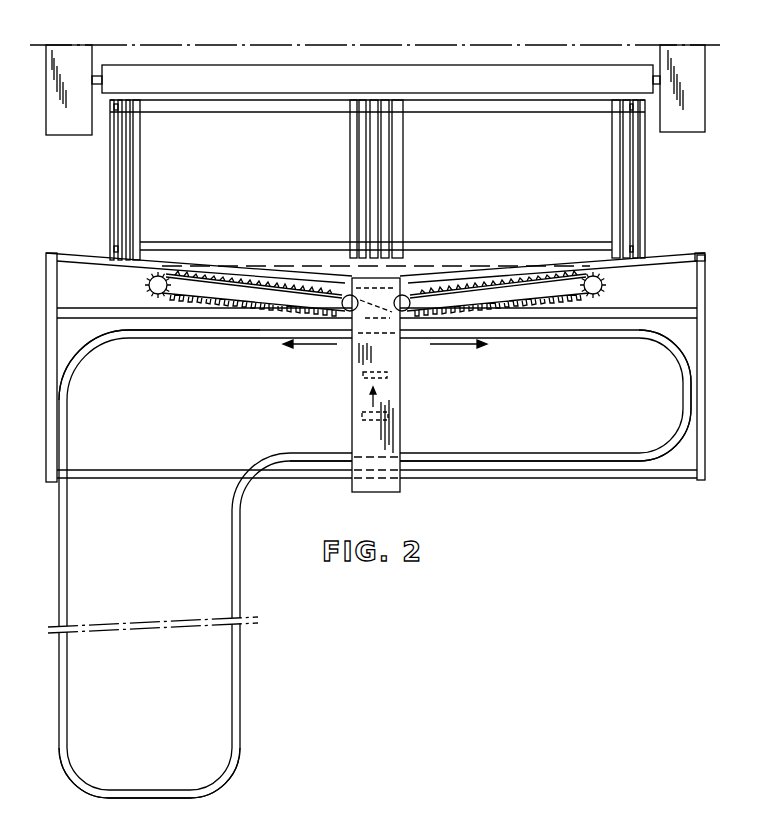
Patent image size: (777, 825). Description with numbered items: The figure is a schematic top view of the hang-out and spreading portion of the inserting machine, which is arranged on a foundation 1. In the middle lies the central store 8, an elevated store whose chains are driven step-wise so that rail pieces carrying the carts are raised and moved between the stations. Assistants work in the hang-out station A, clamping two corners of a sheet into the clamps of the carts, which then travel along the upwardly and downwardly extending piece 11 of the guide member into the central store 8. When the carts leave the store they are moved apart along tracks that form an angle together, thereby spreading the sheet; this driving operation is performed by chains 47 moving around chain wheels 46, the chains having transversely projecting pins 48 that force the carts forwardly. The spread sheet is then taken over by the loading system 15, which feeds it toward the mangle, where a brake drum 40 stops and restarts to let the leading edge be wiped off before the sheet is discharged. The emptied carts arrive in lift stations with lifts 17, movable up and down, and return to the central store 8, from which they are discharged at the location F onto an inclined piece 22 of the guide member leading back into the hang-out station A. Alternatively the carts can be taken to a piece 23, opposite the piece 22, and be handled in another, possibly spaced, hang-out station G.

The foundation 1 is at (671, 312).
The central store 8 is at (400, 486).
The upwardly and downwardly extending piece 11 is at (437, 458).
The loading system 15 is at (651, 185).
The lift 17 is at (688, 259).
The inclined piece 22 is at (637, 338).
The piece 23 is at (177, 338).
The brake drum 40 is at (157, 177).
The chain wheels 46 is at (591, 287).
The chains 47 is at (514, 281).
The transversely projecting pins 48 is at (558, 306).
The hang-out station A is at (375, 564).
The location F is at (385, 354).
The hang-out station G is at (149, 773).